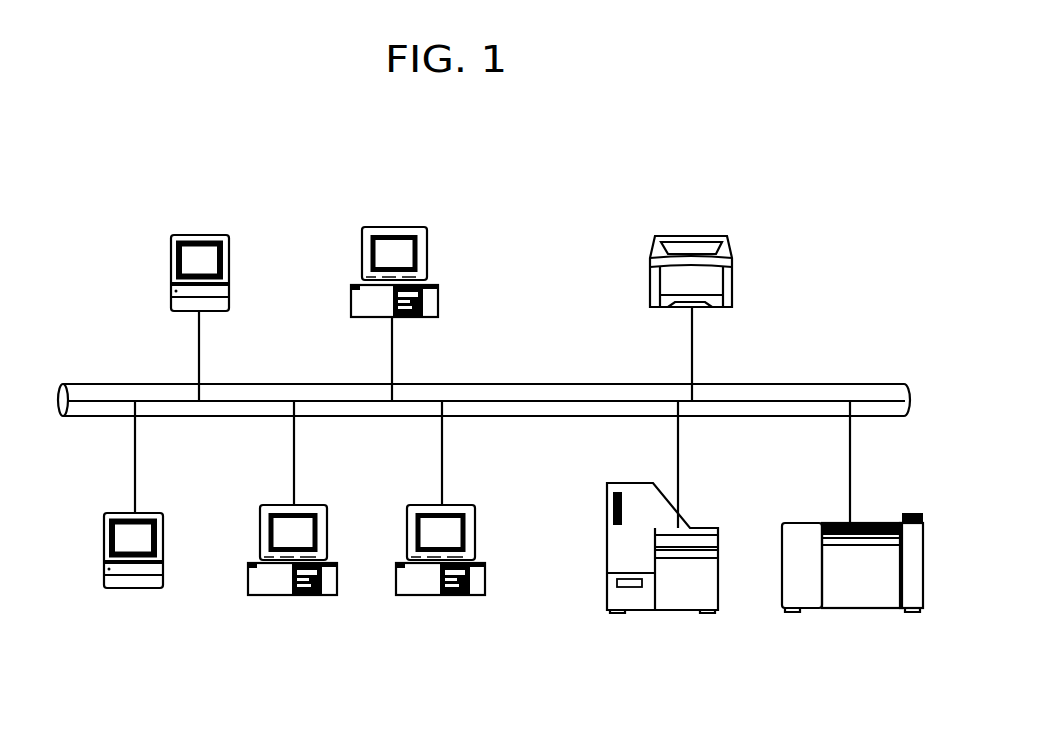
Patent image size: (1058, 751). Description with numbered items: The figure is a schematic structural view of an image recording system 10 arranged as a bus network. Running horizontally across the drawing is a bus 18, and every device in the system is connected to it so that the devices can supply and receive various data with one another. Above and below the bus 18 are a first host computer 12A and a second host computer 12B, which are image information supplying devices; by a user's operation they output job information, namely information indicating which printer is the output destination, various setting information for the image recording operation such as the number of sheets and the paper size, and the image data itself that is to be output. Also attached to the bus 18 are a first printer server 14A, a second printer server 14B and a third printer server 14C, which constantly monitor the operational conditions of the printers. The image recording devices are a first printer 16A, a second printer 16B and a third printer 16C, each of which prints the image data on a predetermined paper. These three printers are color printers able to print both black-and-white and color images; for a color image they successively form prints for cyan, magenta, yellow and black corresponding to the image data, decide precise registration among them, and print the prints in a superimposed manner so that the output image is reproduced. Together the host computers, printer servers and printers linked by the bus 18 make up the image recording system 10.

The image recording system 10 is at (513, 168).
The bus 18 is at (118, 384).
The first host computer 12A is at (227, 272).
The second host computer 12B is at (133, 590).
The first printer server 14A is at (316, 597).
The second printer server 14B is at (440, 597).
The third printer server 14C is at (428, 263).
The first printer 16A is at (670, 612).
The second printer 16B is at (843, 612).
The third printer 16C is at (732, 270).